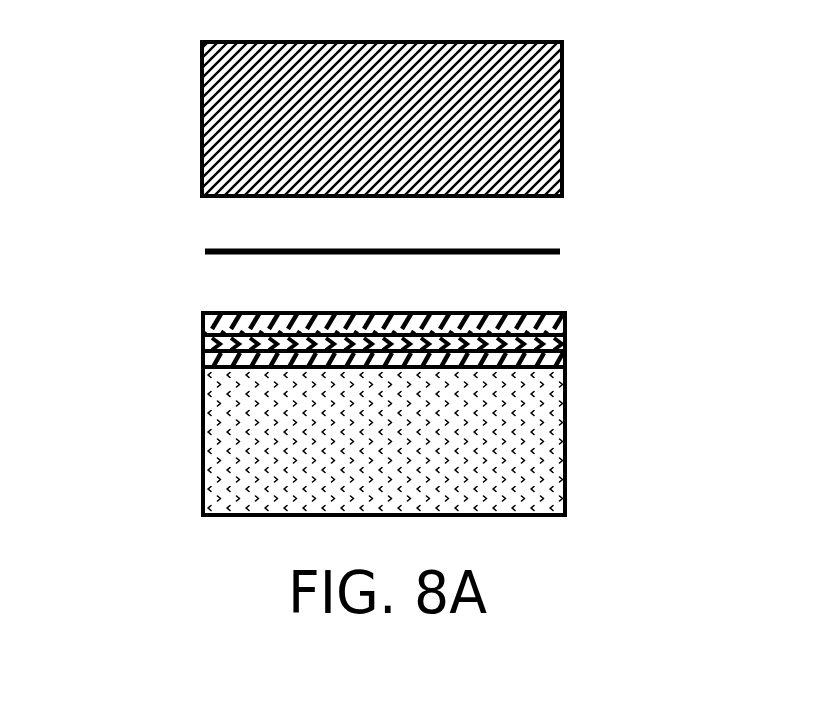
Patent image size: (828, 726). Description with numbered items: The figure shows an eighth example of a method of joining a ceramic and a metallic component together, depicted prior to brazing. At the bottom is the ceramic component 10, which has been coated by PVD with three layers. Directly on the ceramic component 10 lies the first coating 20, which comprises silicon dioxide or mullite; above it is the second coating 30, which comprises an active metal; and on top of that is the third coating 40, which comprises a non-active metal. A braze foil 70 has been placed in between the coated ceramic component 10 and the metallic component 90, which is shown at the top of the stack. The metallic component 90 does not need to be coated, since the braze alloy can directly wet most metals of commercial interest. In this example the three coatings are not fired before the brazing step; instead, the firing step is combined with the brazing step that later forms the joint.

The ceramic component 10 is at (575, 466).
The first coating 20 is at (573, 363).
The second coating 30 is at (573, 345).
The third coating 40 is at (572, 323).
The braze foil 70 is at (183, 249).
The metallic component 90 is at (580, 100).